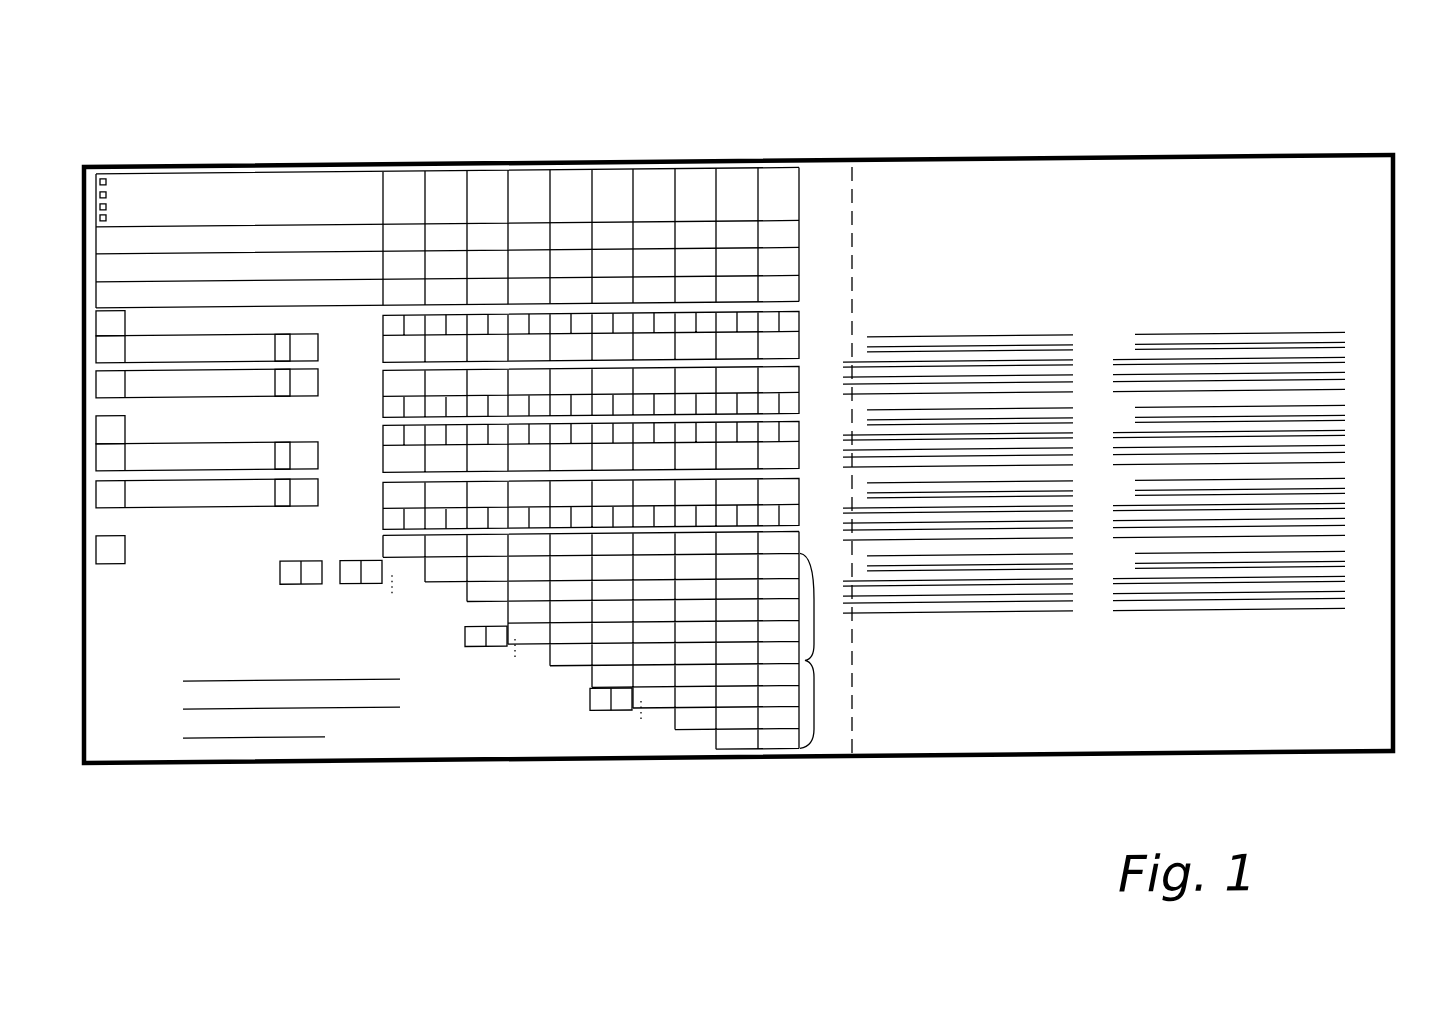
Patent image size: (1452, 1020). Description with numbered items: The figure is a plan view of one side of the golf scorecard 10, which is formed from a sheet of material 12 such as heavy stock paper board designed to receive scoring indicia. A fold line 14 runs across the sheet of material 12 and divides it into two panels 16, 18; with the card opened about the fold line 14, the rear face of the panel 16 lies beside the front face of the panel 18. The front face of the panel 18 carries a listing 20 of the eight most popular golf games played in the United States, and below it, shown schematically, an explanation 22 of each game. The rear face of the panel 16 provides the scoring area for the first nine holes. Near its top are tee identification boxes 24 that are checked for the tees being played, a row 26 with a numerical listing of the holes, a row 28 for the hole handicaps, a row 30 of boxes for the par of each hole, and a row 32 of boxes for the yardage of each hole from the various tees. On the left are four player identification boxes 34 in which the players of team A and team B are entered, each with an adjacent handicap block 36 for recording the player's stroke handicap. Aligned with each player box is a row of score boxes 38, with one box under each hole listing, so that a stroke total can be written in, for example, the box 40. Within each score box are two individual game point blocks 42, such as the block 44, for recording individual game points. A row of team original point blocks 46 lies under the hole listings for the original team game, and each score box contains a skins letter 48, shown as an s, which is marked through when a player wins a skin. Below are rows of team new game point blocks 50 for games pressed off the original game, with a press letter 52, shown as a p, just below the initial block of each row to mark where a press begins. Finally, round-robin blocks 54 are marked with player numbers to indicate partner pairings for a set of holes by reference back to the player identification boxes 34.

The golf scorecard 10 is at (1190, 143).
The sheet of material 12 is at (918, 160).
The fold line 14 is at (855, 663).
The panel 16 is at (503, 757).
The panel 18 is at (1082, 743).
The listing 20 is at (1280, 236).
The explanation of golf games 22 is at (1141, 545).
The tee identification boxes 24 is at (167, 198).
The row 26 is at (143, 234).
The row 28 is at (146, 262).
The row 30 is at (146, 292).
The row 32 is at (579, 196).
The player identification boxes 34 is at (100, 485).
The handicap block 36 is at (318, 342).
The rows of score boxes 38 is at (435, 309).
The box 40 is at (412, 338).
The individual game point blocks 42 is at (380, 311).
The individual game point block 44 is at (513, 300).
The row of team original point blocks 46 is at (378, 546).
The skins letters 48 is at (751, 348).
The rows of team new game point blocks 50 is at (808, 661).
The press letters 52 is at (606, 676).
The round-robin blocks 54 is at (350, 577).